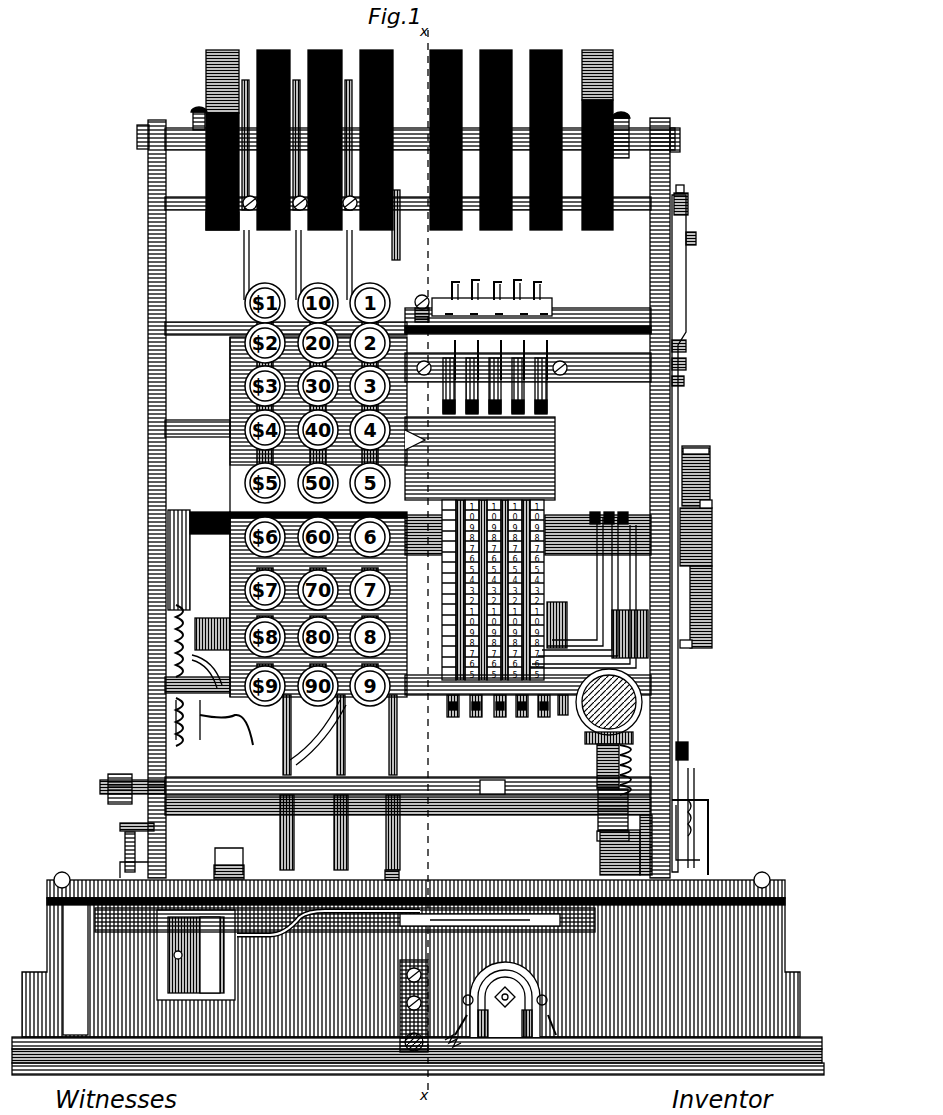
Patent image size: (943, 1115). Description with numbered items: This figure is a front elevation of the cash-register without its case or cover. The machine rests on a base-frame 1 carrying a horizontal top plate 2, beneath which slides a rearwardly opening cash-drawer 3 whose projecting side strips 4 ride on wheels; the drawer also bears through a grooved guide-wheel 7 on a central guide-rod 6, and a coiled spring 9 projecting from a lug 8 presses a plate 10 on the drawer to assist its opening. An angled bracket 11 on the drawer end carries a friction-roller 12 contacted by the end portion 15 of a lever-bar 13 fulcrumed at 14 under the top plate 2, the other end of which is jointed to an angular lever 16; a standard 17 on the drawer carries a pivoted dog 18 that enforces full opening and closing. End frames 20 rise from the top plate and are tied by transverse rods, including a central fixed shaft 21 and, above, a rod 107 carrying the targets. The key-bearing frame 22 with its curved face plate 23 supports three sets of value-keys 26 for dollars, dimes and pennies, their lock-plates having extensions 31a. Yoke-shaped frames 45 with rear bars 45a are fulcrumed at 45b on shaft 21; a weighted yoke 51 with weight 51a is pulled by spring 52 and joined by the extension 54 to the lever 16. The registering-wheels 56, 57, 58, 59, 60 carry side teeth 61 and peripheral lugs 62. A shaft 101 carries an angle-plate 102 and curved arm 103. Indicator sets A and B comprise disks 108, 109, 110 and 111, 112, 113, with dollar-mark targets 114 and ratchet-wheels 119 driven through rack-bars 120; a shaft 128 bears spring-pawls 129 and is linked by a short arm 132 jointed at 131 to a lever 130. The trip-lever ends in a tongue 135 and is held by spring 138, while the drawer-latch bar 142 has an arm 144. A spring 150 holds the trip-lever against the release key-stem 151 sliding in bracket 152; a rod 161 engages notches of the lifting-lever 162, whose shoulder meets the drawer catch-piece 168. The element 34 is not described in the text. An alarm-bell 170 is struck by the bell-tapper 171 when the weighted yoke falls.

The set of indicating-disks A is at (595, 50).
The set of indicator-disks B is at (375, 50).
The base-frame 1 is at (770, 950).
The horizontal top plate 2 is at (312, 880).
The cash-drawer 3 is at (622, 1020).
The projecting side strips 4 is at (88, 890).
The central guide-rod 6 is at (412, 1052).
The grooved guide-wheel 7 is at (405, 1035).
The upwardly-projecting lug 8 is at (508, 1020).
The coiled spring 9 is at (468, 1028).
The plate 10 is at (542, 1028).
The projecting bracket 11 is at (178, 980).
The vertical friction-roller 12 is at (210, 975).
The lever-bar 13 is at (488, 912).
The fulcrum 14 is at (398, 876).
The end portion of lever-bar 15 is at (252, 928).
The angular lever 16 is at (452, 922).
The bracket or standard 17 is at (240, 850).
The pivoted dog 18 is at (218, 868).
The end frames 20 is at (158, 372).
The transverse rod or shaft 21 is at (228, 570).
The key-bearing frame 22 is at (232, 486).
The face plate 23 is at (318, 507).
The value-keys 26 is at (245, 378).
The lock-plate extension 31a is at (280, 712).
The rod 34 is at (388, 728).
The yoke-shaped frame 45 is at (560, 630).
The rear bar of yoke 45a is at (560, 604).
The yoke fulcrum 45b is at (625, 500).
The weighted yoke 51 is at (640, 580).
The weight 51a is at (712, 484).
The spring 52 is at (176, 647).
The downward extension 54 is at (477, 720).
The units registering-wheel 56 is at (563, 718).
The tens registering-wheel 57 is at (543, 720).
The hundreds registering-wheel 58 is at (520, 720).
The tens-of-hundreds registering-wheel 59 is at (498, 720).
The thousands registering-wheel 60 is at (451, 714).
The projecting teeth 61 is at (548, 667).
The peripheral lugs 62 is at (545, 515).
The transverse shaft 101 is at (608, 312).
The angle-plate 102 is at (535, 316).
The curved arm 103 is at (437, 298).
The transverse rod or shaft 107 is at (636, 130).
The cents indicator-disk 108 is at (445, 225).
The dimes indicator-disk 109 is at (500, 225).
The dollar indicator-disk 110 is at (549, 225).
The cents indicator-disk 111 is at (372, 226).
The dimes indicator-disk 112 is at (323, 226).
The dollar indicator-disk 113 is at (272, 226).
The dollar-mark target 114 is at (205, 76).
The ratchet-wheel 119 is at (243, 95).
The rack-bars 120 is at (250, 278).
The transverse rod or shaft 128 is at (165, 208).
The spring-pawls 129 is at (218, 228).
The lever 130 is at (688, 278).
The joint connection 131 is at (698, 239).
The short arm 132 is at (688, 205).
The inclined tongue 135 is at (690, 752).
The coiled spring 138 is at (692, 830).
The drawer-latch bar 142 is at (712, 832).
The laterally-extending arm 144 is at (700, 800).
The spring 150 is at (643, 740).
The release key-stem 151 is at (600, 748).
The inclined bracket 152 is at (613, 812).
The rod 161 is at (120, 827).
The lifting-lever 162 is at (125, 842).
The catch-piece 168 is at (120, 866).
The alarm-bell 170 is at (229, 703).
The bell-tapper 171 is at (175, 738).